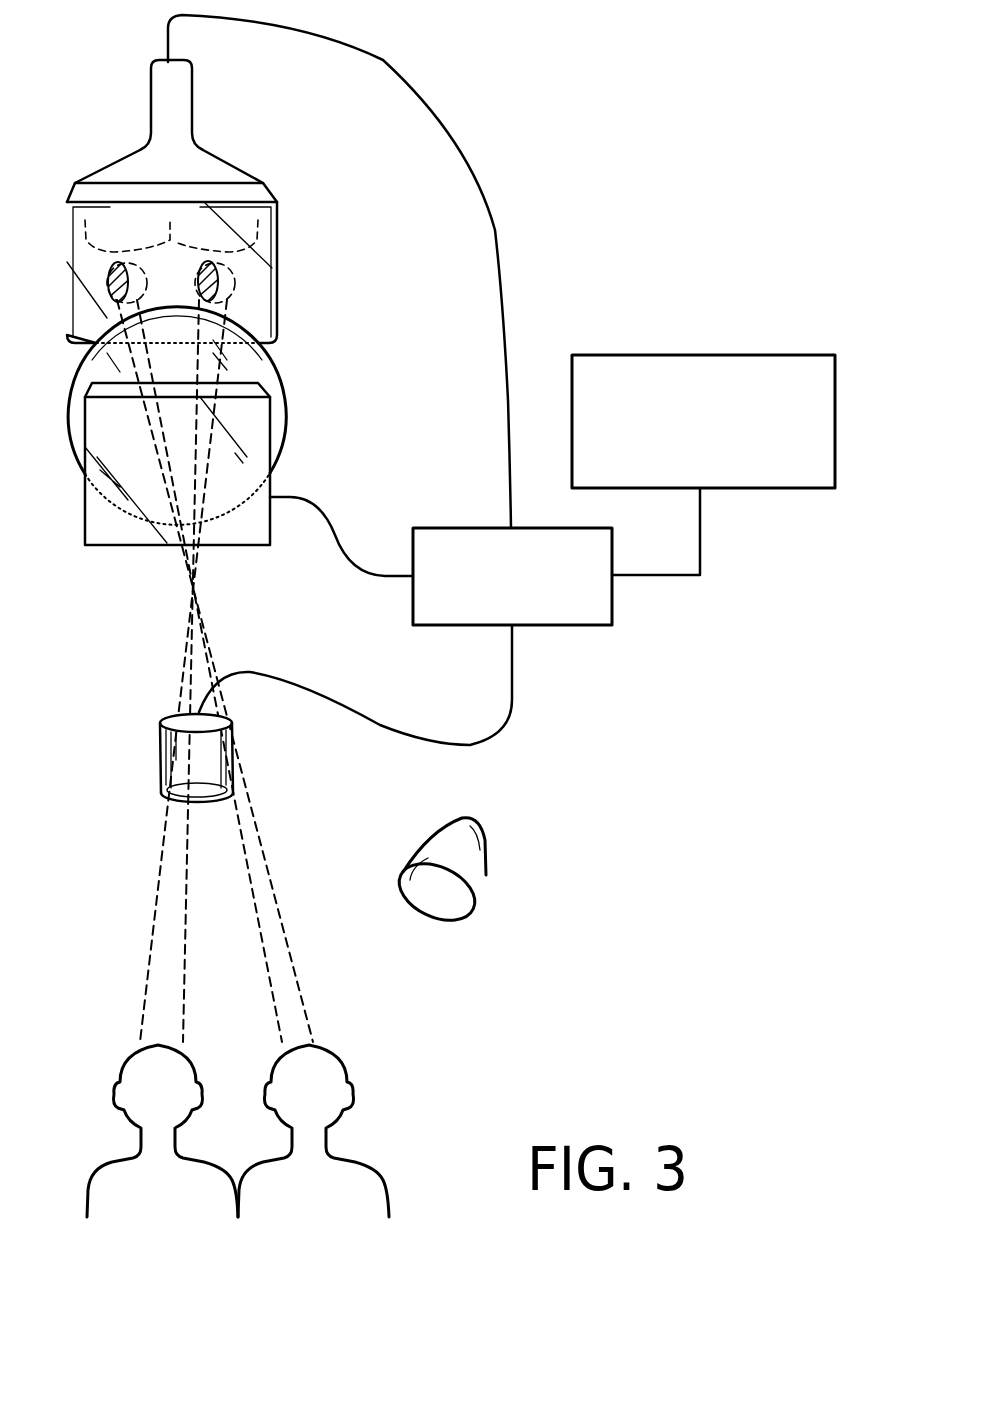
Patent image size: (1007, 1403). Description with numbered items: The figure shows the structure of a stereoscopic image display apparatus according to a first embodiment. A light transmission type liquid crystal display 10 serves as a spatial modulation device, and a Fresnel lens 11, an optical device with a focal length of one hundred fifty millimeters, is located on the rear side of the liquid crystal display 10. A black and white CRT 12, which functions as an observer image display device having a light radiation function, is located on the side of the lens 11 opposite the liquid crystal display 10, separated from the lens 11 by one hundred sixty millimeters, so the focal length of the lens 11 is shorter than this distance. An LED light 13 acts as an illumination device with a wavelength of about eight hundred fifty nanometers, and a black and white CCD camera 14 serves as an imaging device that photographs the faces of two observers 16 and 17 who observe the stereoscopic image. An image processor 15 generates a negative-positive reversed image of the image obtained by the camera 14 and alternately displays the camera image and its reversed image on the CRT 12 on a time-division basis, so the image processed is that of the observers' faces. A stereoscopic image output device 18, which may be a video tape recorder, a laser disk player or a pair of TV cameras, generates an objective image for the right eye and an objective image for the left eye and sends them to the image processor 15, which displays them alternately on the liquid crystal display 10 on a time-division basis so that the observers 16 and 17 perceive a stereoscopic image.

The light transmission type liquid crystal display 10 is at (85, 517).
The Fresnel lens 11 is at (273, 363).
The black and white CRT 12 is at (212, 167).
The LED light 13 is at (486, 868).
The black and white CCD camera 14 is at (162, 757).
The image processor 15 is at (478, 500).
The observer 16 is at (366, 1159).
The observer 17 is at (95, 1163).
The stereoscopic image output device 18 is at (782, 325).